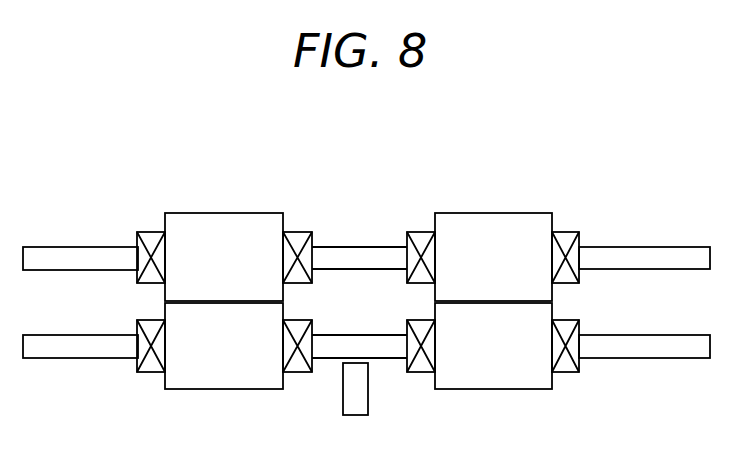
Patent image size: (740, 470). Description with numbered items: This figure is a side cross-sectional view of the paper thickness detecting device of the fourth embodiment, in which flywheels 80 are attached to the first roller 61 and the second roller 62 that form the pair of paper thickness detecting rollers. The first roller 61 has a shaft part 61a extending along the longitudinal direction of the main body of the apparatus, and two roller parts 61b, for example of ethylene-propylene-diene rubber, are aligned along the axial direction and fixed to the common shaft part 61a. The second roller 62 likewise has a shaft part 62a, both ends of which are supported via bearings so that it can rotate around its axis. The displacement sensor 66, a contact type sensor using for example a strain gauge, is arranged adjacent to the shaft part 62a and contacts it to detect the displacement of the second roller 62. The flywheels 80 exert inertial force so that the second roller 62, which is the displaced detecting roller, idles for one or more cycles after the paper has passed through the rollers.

The first roller 61 is at (533, 222).
The shaft part 61a is at (692, 257).
The roller part 61b is at (450, 222).
The second roller 62 is at (535, 380).
The shaft part 62a is at (692, 336).
The displacement sensor 66 is at (355, 407).
The flywheel 80 is at (422, 229).